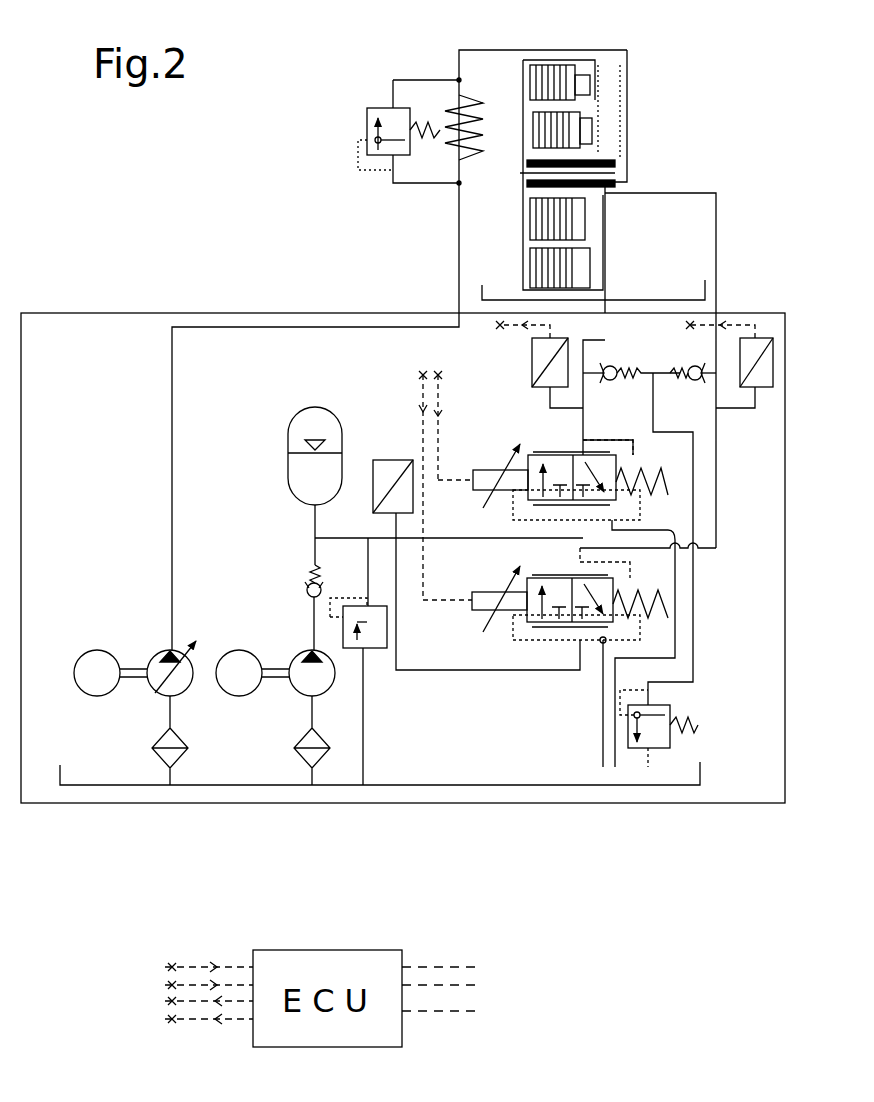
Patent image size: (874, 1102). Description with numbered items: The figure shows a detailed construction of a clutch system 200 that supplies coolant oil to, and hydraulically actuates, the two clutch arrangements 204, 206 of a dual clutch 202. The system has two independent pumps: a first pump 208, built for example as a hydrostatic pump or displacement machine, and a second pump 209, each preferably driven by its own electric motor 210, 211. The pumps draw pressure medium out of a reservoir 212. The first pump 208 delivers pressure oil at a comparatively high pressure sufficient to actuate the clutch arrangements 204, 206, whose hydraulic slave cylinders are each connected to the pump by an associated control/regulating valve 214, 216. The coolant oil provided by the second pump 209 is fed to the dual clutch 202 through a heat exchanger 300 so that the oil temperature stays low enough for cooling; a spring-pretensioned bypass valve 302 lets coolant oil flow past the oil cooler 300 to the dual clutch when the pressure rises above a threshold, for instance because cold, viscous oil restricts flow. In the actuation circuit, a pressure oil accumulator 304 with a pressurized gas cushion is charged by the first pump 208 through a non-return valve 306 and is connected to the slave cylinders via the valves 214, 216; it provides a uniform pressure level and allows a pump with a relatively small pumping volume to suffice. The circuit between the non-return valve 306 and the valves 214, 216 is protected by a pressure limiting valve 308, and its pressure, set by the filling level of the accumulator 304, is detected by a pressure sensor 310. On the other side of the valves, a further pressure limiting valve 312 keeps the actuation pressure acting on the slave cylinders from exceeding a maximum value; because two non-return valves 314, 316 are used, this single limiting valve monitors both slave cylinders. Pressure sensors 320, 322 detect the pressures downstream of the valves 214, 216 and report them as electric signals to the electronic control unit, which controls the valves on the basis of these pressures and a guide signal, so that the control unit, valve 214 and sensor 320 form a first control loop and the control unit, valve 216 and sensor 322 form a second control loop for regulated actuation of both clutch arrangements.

The clutch system 200 is at (246, 199).
The dual clutch 202 is at (580, 60).
The clutch arrangement 204 is at (575, 118).
The clutch arrangement 206 is at (530, 65).
The first pump 208 is at (312, 686).
The second pump 209 is at (150, 692).
The electric motor 210 is at (230, 690).
The electric motor 211 is at (93, 665).
The reservoir 212 is at (500, 292).
The control/regulating valve 214 is at (540, 462).
The control/regulating valve 216 is at (550, 630).
The heat exchanger 300 is at (452, 100).
The bypass valve 302 is at (368, 132).
The pressure oil accumulator 304 is at (315, 418).
The non-return valve 306 is at (308, 582).
The pressure limiting valve 308 is at (370, 640).
The pressure sensor 310 is at (400, 465).
The pressure limiting valve 312 is at (650, 738).
The non-return valve 314 is at (612, 368).
The non-return valve 316 is at (697, 368).
The pressure sensor 320 is at (530, 345).
The pressure sensor 322 is at (762, 392).